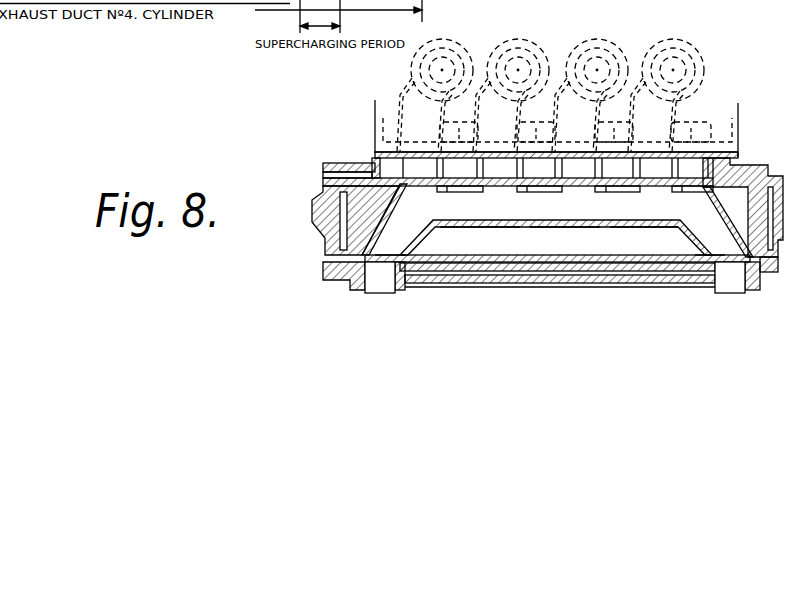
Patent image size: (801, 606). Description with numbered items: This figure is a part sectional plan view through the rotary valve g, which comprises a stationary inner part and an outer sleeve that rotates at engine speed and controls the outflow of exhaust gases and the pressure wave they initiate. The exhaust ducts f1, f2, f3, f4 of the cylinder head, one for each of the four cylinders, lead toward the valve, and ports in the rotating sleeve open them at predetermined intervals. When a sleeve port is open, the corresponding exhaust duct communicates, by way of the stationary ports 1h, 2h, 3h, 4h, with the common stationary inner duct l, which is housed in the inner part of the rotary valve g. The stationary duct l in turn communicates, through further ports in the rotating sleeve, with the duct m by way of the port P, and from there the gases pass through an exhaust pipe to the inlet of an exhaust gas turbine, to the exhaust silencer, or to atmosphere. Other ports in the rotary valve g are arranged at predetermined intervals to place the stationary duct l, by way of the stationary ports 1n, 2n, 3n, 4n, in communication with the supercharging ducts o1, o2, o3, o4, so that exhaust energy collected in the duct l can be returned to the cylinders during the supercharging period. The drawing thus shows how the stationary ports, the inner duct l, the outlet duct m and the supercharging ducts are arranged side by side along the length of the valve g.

The exhaust duct of cylinder 1 f1 is at (430, 123).
The exhaust duct of cylinder 2 f2 is at (507, 123).
The exhaust duct of cylinder 3 f3 is at (585, 123).
The exhaust duct of cylinder 4 f4 is at (663, 123).
The supercharging duct o1 is at (460, 175).
The supercharging duct o2 is at (539, 175).
The supercharging duct o3 is at (617, 175).
The supercharging duct o4 is at (692, 175).
The stationary port 1n is at (450, 192).
The stationary port 2n is at (530, 190).
The stationary port 3n is at (609, 190).
The stationary port 4n is at (686, 190).
The stationary port 1h is at (410, 186).
The stationary port 2h is at (495, 190).
The stationary port 3h is at (575, 190).
The stationary port 4h is at (645, 190).
The common stationary inner duct l is at (506, 208).
The rotary valve g is at (328, 192).
The duct m is at (385, 280).
The port P is at (394, 255).